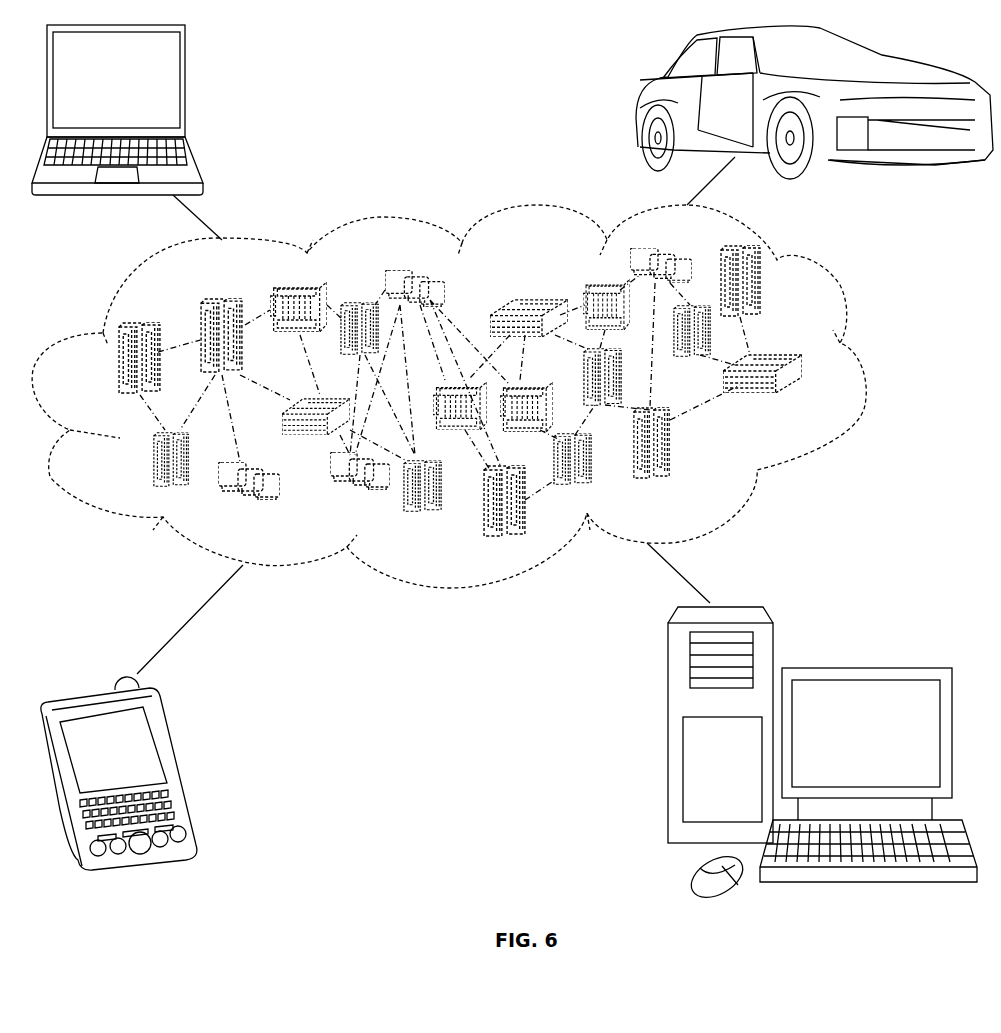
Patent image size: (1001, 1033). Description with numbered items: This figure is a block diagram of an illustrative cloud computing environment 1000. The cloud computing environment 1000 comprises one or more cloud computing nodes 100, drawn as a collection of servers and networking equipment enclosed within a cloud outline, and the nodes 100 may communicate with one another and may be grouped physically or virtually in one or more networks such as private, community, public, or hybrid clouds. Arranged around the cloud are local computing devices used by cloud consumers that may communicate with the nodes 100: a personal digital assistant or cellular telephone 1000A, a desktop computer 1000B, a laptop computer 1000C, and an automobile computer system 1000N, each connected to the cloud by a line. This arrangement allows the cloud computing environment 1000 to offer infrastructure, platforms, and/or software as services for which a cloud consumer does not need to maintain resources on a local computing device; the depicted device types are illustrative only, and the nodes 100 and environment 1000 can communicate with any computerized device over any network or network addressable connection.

The cloud computing nodes 100 is at (805, 402).
The cloud computing environment 1000 is at (863, 370).
The personal digital assistant (PDA) or cellular telephone 1000A is at (177, 767).
The desktop computer 1000B is at (863, 662).
The laptop computer 1000C is at (187, 90).
The automobile computer system 1000N is at (638, 105).